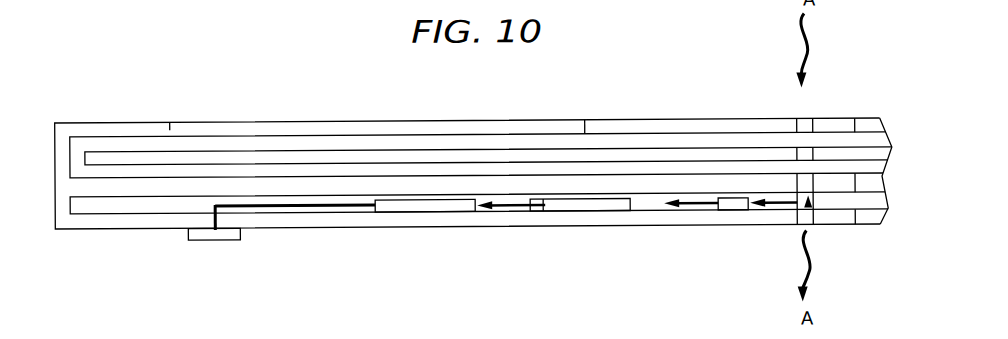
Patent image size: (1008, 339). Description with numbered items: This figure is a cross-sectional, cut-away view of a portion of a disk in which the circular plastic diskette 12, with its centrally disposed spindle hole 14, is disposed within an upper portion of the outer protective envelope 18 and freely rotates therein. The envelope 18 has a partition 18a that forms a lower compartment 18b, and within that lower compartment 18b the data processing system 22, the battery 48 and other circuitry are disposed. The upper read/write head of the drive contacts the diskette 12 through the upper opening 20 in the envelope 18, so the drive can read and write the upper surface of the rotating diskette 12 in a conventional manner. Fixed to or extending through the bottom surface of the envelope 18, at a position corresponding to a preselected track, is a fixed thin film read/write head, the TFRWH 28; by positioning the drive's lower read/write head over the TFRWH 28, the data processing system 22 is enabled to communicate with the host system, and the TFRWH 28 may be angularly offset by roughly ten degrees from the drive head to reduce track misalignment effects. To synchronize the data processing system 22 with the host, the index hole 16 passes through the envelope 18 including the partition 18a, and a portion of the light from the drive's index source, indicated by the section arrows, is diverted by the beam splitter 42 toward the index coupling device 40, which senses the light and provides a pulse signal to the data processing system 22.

The diskette 12 is at (295, 163).
The spindle hole 14 is at (878, 154).
The index hole 16 is at (813, 133).
The envelope 18 is at (663, 123).
The partition 18a is at (118, 188).
The lower compartment 18b is at (147, 203).
The upper opening 20 is at (170, 131).
The data processing system 22 is at (428, 215).
The TFRWH 28 is at (218, 241).
The index coupling device 40 is at (733, 214).
The beam splitter 42 is at (813, 210).
The battery 48 is at (583, 214).